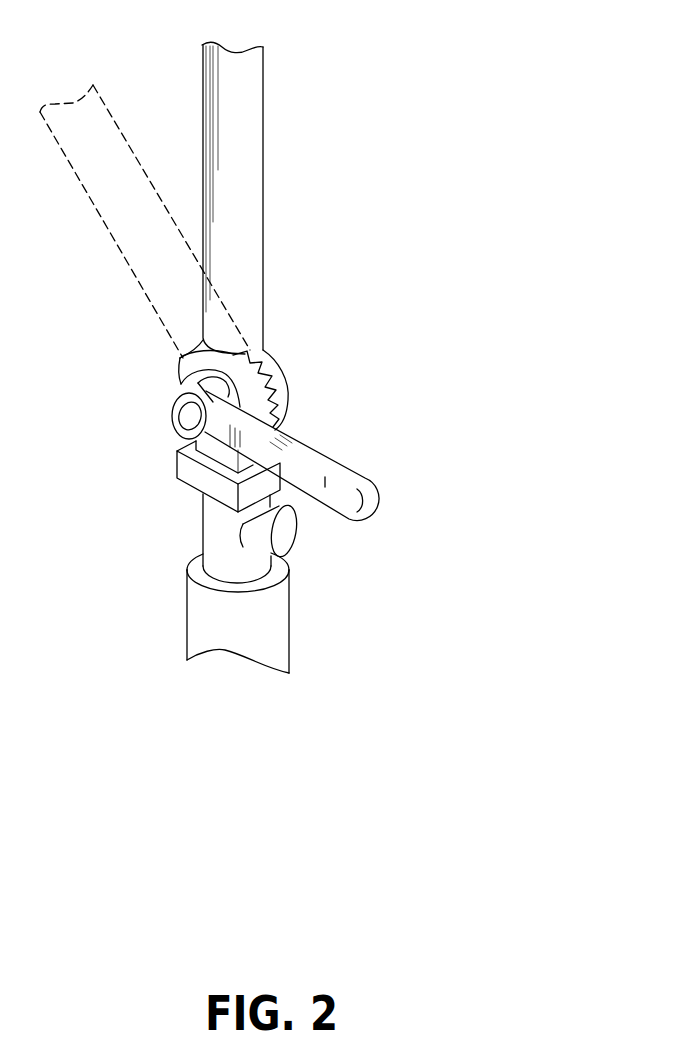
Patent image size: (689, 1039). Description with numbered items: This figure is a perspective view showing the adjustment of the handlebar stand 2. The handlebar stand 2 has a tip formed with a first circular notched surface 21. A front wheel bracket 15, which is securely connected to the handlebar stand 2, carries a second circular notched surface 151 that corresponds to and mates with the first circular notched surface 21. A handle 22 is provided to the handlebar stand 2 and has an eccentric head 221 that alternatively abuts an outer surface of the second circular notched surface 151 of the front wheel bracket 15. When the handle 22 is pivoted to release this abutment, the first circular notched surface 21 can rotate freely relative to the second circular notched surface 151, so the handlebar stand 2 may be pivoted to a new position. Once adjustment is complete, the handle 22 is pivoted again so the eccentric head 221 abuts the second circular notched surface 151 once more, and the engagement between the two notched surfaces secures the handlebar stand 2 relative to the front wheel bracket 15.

The handlebar stand 2 is at (250, 180).
The front wheel bracket 15 is at (213, 530).
The second circular notched surface 151 is at (278, 368).
The first circular notched surface 21 is at (287, 400).
The handle 22 is at (357, 485).
The eccentric head 221 is at (182, 386).